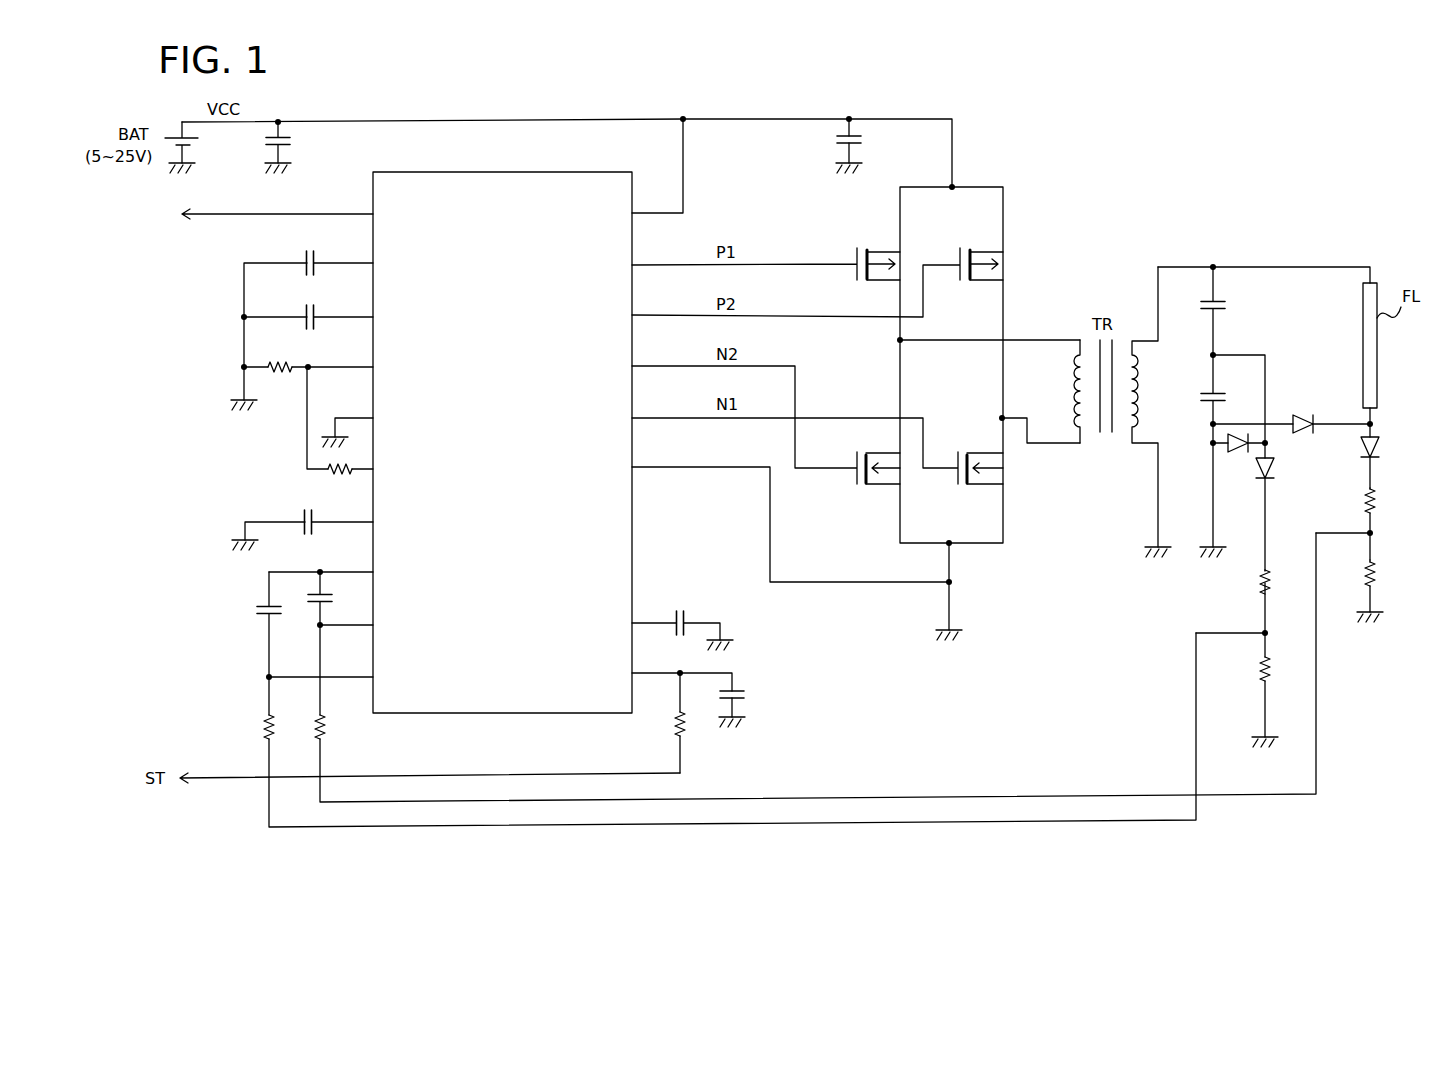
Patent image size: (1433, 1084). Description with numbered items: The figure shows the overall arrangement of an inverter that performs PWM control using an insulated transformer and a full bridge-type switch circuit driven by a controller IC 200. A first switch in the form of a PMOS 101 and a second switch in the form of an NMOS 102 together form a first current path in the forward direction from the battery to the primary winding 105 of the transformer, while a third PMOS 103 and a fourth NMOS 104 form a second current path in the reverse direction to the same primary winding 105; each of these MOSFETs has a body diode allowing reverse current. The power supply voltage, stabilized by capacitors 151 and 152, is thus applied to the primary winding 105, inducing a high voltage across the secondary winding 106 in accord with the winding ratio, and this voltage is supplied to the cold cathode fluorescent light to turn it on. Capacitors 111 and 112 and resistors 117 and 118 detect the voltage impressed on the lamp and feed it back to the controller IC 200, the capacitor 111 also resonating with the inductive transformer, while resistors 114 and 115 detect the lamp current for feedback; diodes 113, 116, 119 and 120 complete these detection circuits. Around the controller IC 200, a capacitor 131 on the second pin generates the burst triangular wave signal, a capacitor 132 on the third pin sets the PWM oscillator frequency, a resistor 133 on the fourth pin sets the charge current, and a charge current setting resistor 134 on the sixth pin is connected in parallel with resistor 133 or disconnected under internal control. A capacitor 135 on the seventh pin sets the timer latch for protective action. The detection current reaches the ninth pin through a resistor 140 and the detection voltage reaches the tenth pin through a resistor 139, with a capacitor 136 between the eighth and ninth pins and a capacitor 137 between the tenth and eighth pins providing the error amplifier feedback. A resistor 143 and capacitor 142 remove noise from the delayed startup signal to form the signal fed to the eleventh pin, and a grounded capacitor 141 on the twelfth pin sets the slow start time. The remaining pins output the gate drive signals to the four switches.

The controller IC 200 is at (500, 157).
The P-type MOSFET (PMOS) 101 is at (766, 247).
The N-type MOSFET (NMOS) 102 is at (817, 468).
The P-type MOSFET (PMOS) 103 is at (817, 266).
The N-type MOSFET (NMOS) 104 is at (766, 442).
The primary winding 105 is at (1056, 391).
The secondary winding 106 is at (1155, 412).
The capacitor 111 is at (1231, 312).
The capacitor 112 is at (1225, 399).
The diode 113 is at (1387, 448).
The resistor 114 is at (1389, 524).
The resistor 115 is at (1385, 591).
The diode 116 is at (1283, 506).
The resistor 117 is at (1285, 603).
The resistor 118 is at (1280, 690).
The diode 119 is at (1293, 411).
The diode 120 is at (1239, 454).
The capacitor 131 is at (308, 298).
The capacitor 132 is at (307, 306).
The resistor 133 is at (302, 374).
The charge current setting resistor 134 is at (340, 432).
The capacitor 135 is at (302, 517).
The capacitor 136 is at (321, 598).
The capacitor 137 is at (298, 626).
The resistor 139 is at (730, 730).
The resistor 140 is at (815, 667).
The capacitor 141 is at (682, 620).
The capacitor 142 is at (704, 700).
The resistor 143 is at (659, 721).
The capacitor 151 is at (298, 147).
The capacitor 152 is at (869, 146).